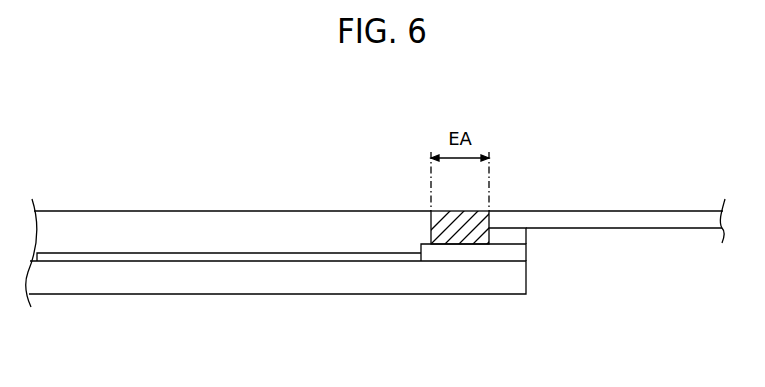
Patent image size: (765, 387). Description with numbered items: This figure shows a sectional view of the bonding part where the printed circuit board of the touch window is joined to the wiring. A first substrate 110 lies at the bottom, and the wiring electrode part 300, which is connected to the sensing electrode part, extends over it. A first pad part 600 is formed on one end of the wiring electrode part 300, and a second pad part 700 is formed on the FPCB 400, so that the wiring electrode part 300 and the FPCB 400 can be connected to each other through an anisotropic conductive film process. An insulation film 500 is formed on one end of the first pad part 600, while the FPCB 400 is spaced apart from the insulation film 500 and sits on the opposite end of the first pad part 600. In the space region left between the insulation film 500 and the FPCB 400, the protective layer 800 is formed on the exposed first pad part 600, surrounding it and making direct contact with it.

The first substrate 110 is at (306, 283).
The wiring electrode part 300 is at (176, 258).
The FPCB 400 is at (677, 216).
The insulation film 500 is at (240, 228).
The first pad part 600 is at (477, 253).
The second pad part 700 is at (518, 236).
The protective layer 800 is at (482, 219).